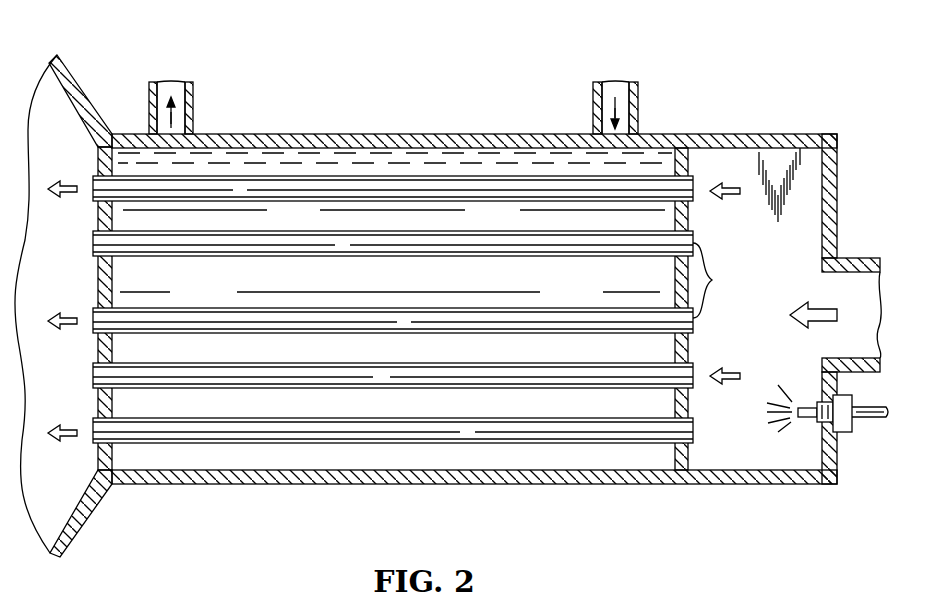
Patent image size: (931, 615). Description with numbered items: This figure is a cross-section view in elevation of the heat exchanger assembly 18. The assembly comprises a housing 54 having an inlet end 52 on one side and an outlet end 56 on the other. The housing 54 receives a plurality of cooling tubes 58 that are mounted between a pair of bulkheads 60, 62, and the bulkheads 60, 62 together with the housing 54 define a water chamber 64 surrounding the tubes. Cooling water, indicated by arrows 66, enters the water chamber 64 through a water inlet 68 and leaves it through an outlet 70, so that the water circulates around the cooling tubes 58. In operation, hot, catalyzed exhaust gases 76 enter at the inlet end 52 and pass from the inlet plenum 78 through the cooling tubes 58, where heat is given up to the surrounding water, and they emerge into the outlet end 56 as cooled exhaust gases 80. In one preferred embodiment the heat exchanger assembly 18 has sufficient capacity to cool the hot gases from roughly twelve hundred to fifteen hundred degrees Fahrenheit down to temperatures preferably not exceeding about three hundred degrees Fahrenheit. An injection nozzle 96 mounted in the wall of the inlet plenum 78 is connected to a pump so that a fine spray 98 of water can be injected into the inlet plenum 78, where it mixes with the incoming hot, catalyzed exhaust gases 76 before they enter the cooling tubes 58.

The heat exchanger assembly 18 is at (303, 54).
The inlet end 52 is at (860, 258).
The housing 54 is at (783, 134).
The outlet end 56 is at (90, 520).
The cooling tubes 58 is at (712, 280).
The bulkhead 60 is at (112, 268).
The bulkhead 62 is at (675, 272).
The water chamber 64 is at (380, 283).
The cooling water 66 is at (167, 124).
The water inlet 68 is at (640, 103).
The outlet 70 is at (193, 100).
The hot catalyzed exhaust gases 76 is at (806, 323).
The inlet plenum 78 is at (730, 238).
The cooled exhaust gases 80 is at (65, 420).
The injection nozzle 96 is at (840, 432).
The fine spray 98 is at (787, 427).